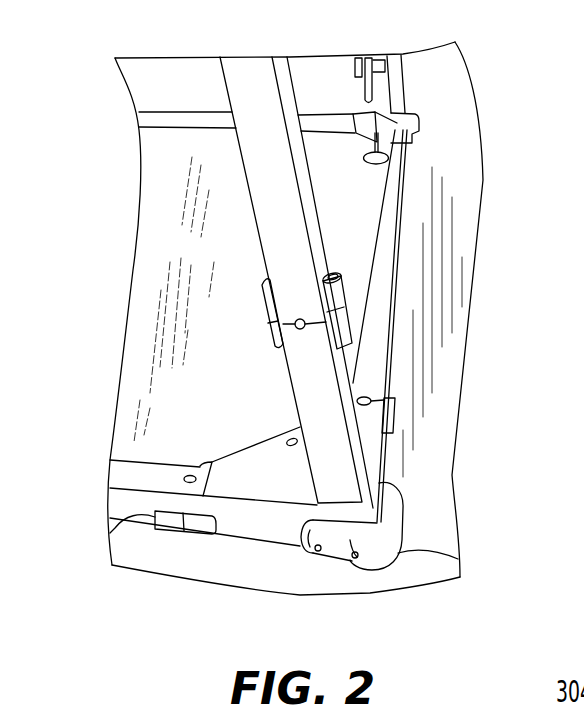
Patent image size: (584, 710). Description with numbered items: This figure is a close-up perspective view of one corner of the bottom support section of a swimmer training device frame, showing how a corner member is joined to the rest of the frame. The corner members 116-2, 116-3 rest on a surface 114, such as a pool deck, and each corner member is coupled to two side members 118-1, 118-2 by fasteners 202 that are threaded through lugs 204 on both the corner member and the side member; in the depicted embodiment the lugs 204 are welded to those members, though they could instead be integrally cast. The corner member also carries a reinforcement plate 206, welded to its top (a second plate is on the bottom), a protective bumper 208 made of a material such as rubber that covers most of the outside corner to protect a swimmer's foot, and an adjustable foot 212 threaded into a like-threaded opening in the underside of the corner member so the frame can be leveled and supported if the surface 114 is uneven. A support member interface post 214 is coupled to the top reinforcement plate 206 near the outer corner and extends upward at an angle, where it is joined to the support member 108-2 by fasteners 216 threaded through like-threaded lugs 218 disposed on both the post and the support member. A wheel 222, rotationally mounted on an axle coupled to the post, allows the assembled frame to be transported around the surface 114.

The support member 108-2 is at (232, 171).
The surface 114 is at (450, 310).
The corner member 116-2 is at (424, 432).
The corner member 116-3 is at (434, 120).
The side member 118-1 is at (133, 473).
The side member 118-2 is at (402, 213).
The fastener 202 is at (121, 522).
The lug 204 is at (196, 530).
The reinforcement plate 206 is at (260, 458).
The protective bumper 208 is at (458, 560).
The adjustable foot 212 is at (367, 165).
The support member interface post 214 is at (288, 376).
The fastener 216 is at (263, 282).
The lug 218 is at (264, 338).
The wheel 222 is at (362, 62).